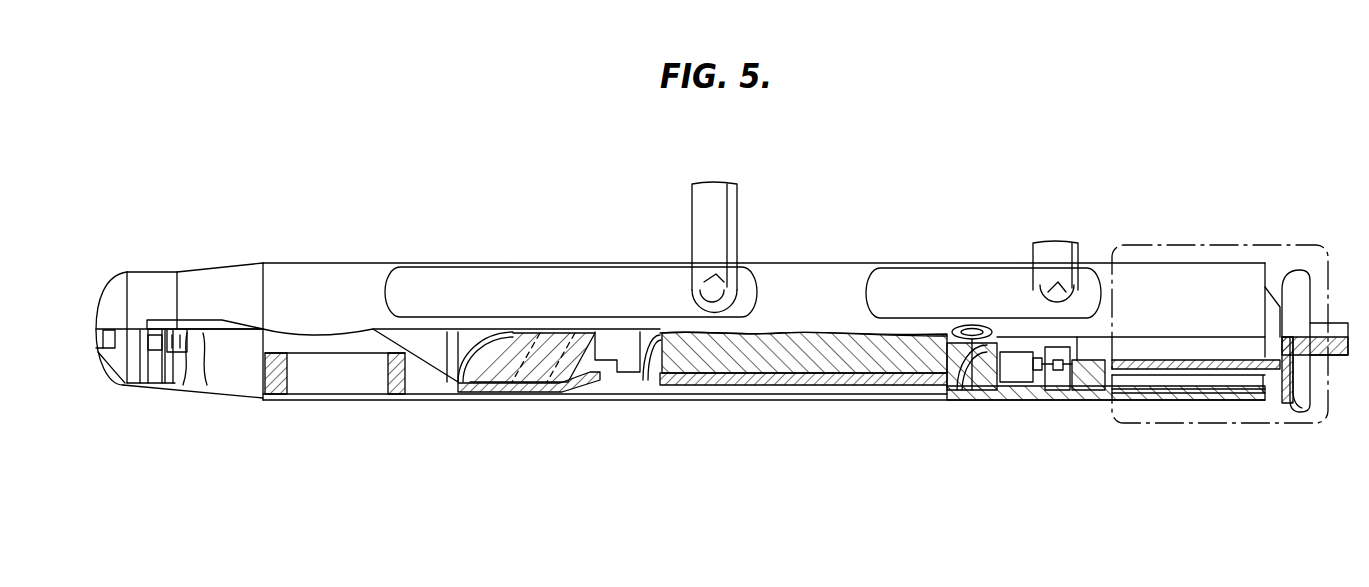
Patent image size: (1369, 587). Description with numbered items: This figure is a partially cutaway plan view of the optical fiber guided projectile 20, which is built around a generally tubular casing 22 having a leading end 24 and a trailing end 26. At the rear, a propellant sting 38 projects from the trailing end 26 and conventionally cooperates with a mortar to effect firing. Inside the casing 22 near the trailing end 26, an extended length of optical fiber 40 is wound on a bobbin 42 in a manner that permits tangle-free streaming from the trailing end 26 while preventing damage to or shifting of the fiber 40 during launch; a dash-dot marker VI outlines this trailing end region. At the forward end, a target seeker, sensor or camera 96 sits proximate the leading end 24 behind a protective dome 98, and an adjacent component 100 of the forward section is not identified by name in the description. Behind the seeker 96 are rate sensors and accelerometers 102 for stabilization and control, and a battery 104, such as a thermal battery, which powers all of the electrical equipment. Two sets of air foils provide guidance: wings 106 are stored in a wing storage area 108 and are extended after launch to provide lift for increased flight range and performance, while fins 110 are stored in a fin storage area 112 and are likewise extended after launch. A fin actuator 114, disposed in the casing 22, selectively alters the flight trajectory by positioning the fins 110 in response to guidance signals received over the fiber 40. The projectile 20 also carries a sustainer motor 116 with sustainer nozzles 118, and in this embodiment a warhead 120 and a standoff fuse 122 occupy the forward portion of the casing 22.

The projectile 20 is at (806, 208).
The casing 22 is at (366, 263).
The leading end 24 is at (114, 287).
The trailing end 26 is at (1265, 268).
The propellant sting 38 is at (1345, 324).
The optical fiber 40 is at (1143, 388).
The bobbin 42 is at (1197, 378).
The target seeker, sensor or camera 96 is at (133, 360).
The protective dome 98 is at (97, 315).
The forward section 100 is at (247, 384).
The rate sensors and accelerometers 102 is at (245, 276).
The battery 104 is at (343, 384).
The wings 106 is at (712, 197).
The wing storage area 108 is at (538, 276).
The fins 110 is at (1073, 244).
The fin storage area 112 is at (927, 277).
The fin actuator 114 is at (1013, 375).
The sustainer motor 116 is at (820, 363).
The sustainer nozzles 118 is at (972, 339).
The warhead 120 is at (562, 372).
The standoff fuse 122 is at (205, 337).
The section VI indicator VI is at (1332, 253).